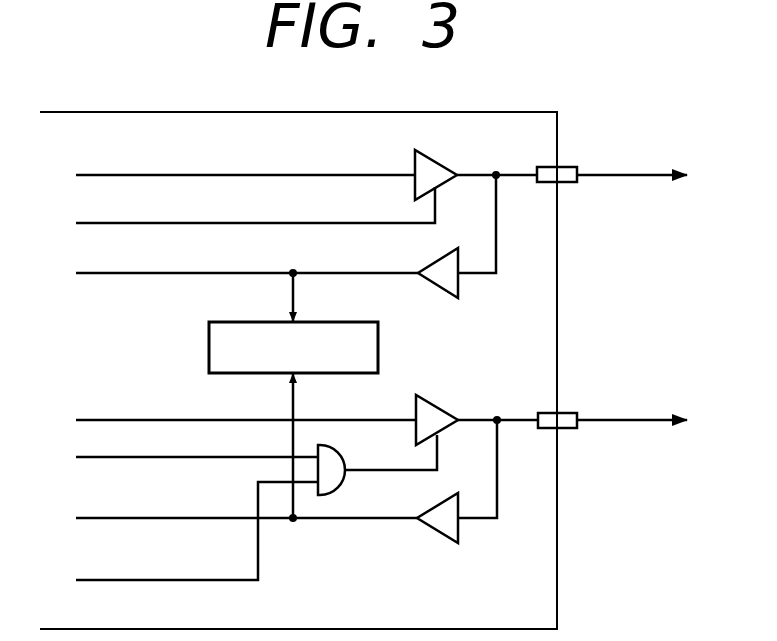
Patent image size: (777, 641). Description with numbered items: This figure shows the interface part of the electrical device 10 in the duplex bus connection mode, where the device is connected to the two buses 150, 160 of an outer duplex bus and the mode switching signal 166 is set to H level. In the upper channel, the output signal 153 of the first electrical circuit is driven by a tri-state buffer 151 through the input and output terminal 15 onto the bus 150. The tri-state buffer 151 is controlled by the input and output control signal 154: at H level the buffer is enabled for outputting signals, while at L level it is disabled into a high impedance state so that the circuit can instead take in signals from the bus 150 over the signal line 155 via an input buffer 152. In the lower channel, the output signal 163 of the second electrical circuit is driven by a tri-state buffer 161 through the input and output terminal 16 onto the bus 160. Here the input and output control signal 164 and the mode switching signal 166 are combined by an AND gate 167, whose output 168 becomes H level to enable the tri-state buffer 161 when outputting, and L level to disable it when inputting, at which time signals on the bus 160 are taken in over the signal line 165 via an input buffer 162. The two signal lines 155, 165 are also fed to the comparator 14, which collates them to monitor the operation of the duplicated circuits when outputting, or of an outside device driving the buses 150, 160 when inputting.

The electrical device 10 is at (524, 112).
The comparator 14 is at (348, 322).
The input and output terminal 15 is at (567, 167).
The input and output terminal 16 is at (568, 413).
The bus 150 is at (636, 175).
The bus 160 is at (638, 420).
The tri-state buffer 151 is at (435, 163).
The input buffer 152 is at (430, 282).
The output signal 153 is at (118, 175).
The input and output control signal 154 is at (118, 223).
The signal line 155 is at (118, 273).
The tri-state buffer 161 is at (435, 409).
The input buffer 162 is at (432, 527).
The output signal 163 is at (118, 420).
The input and output control signal 164 is at (118, 457).
The signal line 165 is at (118, 518).
The mode switching signal 166 is at (118, 580).
The AND gate 167 is at (340, 460).
The output of AND gate 168 is at (438, 448).